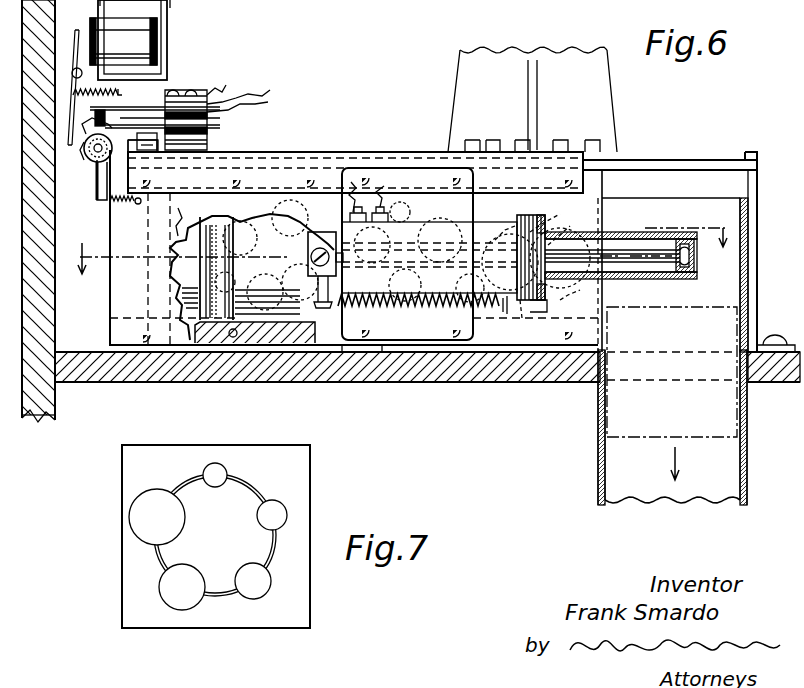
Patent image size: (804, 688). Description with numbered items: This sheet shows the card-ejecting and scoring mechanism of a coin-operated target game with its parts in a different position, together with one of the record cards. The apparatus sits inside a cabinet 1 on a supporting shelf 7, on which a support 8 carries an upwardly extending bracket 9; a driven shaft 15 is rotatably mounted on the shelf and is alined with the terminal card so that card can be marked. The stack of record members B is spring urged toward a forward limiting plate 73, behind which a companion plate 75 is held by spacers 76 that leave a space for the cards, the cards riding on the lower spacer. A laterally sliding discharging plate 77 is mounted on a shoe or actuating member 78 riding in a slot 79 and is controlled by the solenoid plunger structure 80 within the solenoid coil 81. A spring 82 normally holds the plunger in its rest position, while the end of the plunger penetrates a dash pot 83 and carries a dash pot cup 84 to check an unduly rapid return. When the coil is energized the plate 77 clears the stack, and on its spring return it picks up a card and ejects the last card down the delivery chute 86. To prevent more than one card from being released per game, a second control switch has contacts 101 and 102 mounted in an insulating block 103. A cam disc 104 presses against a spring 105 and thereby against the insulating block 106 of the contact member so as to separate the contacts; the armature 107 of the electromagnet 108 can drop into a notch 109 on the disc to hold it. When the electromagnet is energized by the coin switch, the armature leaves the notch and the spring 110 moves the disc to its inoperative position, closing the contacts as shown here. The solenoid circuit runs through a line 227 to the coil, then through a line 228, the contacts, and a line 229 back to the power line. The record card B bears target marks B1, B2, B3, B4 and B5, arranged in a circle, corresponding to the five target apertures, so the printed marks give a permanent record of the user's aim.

In FIG. 6, the cabinet 1 is at (34, 430).
In FIG. 6, the supporting shelf 7 is at (345, 372).
In FIG. 6, the support 8 is at (660, 145).
In FIG. 6, the bracket 9 is at (533, 60).
In FIG. 6, the shaft 15 is at (520, 238).
In FIG. 6, the forward limiting plate 73 is at (125, 292).
In FIG. 6, the companion plate 75 is at (190, 320).
In FIG. 6, the spacers 76 is at (148, 195).
In FIG. 6, the sliding or discharging plate 77 is at (282, 322).
In FIG. 6, the shoe or actuating member 78 is at (316, 232).
In FIG. 6, the slot 79 is at (252, 270).
In FIG. 6, the solenoid plunger structure 80 is at (636, 258).
In FIG. 6, the solenoid coil 81 is at (490, 292).
In FIG. 6, the spring 82 is at (428, 308).
In FIG. 6, the dash pot 83 is at (632, 240).
In FIG. 6, the dash pot cup 84 is at (686, 238).
In FIG. 6, the delivery chute 86 is at (600, 462).
In FIG. 6, the contact 101 is at (152, 104).
In FIG. 6, the contact 102 is at (210, 113).
In FIG. 6, the insulating block 103 is at (222, 92).
In FIG. 6, the cam disc 104 is at (90, 160).
In FIG. 6, the spring 105 is at (140, 134).
In FIG. 6, the insulating block 106 is at (115, 96).
In FIG. 6, the armature 107 is at (74, 28).
In FIG. 6, the electromagnet 108 is at (140, 30).
In FIG. 6, the notch 109 is at (86, 156).
In FIG. 6, the spring 110 is at (116, 200).
In FIG. 6, the line 227 is at (390, 204).
In FIG. 6, the line 228 is at (352, 182).
In FIG. 6, the line 229 is at (249, 86).
In FIG. 6, the record member B is at (392, 190).
In FIG. 7, the record member B is at (130, 575).
In FIG. 6, the target mark B1 is at (569, 225).
In FIG. 7, the target mark B1 is at (137, 506).
In FIG. 6, the target mark B2 is at (578, 302).
In FIG. 7, the target mark B2 is at (182, 600).
In FIG. 6, the target mark B3 is at (533, 321).
In FIG. 7, the target mark B3 is at (255, 595).
In FIG. 6, the target mark B4 is at (495, 231).
In FIG. 7, the target mark B4 is at (275, 515).
In FIG. 6, the target mark B5 is at (552, 214).
In FIG. 7, the target mark B5 is at (214, 472).